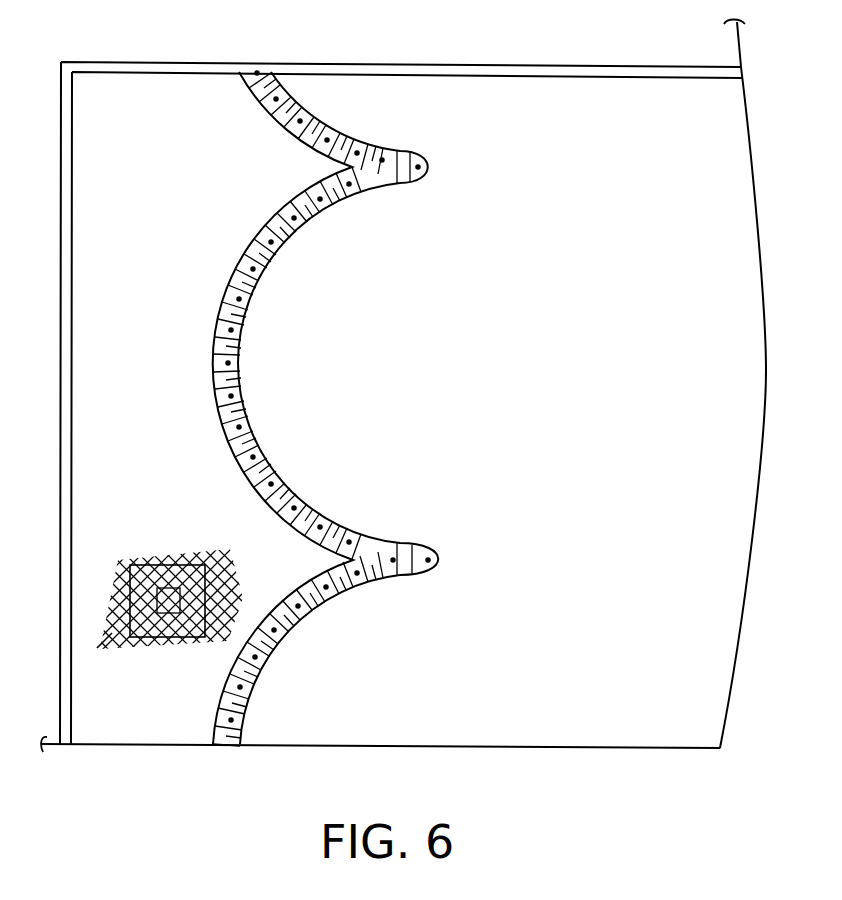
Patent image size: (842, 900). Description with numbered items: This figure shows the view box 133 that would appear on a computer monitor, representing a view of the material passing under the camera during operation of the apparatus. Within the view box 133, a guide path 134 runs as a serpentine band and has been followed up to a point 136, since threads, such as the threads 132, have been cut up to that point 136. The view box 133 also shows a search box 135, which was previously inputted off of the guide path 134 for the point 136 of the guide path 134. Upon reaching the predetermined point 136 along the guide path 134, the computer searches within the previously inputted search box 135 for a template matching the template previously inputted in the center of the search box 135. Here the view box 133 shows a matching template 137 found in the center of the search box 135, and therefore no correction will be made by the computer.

The view box 133 is at (195, 68).
The guide path 134 is at (253, 435).
The search box 135 is at (157, 562).
The point 136 is at (316, 602).
The matching template 137 is at (147, 643).
The threads 132 is at (255, 672).